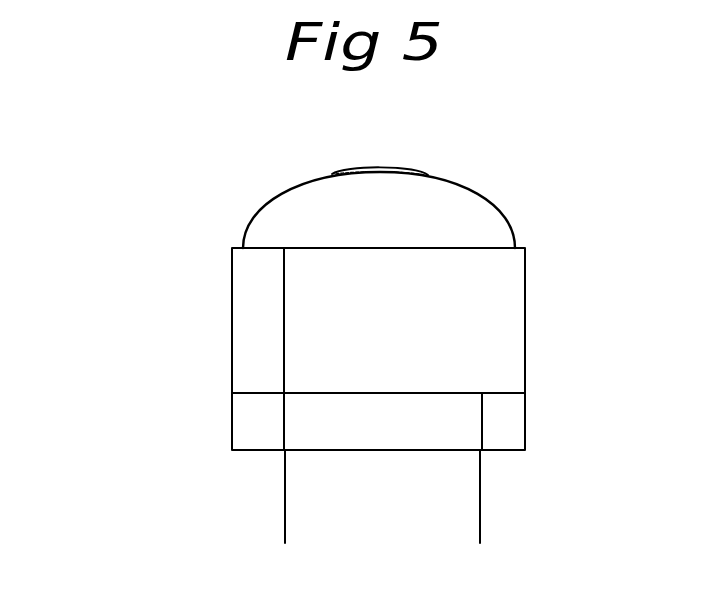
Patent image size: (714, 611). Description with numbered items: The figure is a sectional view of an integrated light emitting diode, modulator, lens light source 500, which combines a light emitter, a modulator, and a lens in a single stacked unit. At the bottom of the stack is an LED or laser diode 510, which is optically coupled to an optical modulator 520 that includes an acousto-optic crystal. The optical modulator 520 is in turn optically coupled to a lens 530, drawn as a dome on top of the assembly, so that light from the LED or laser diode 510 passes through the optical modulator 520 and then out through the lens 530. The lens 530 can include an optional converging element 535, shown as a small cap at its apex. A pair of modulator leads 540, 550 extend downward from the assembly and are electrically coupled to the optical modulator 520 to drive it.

The integrated light emitting diode, modulator, lens light source 500 is at (163, 282).
The LED or laser diode 510 is at (510, 423).
The optical modulator 520 is at (503, 322).
The lens 530 is at (480, 220).
The converging element 535 is at (373, 167).
The modulator lead 540 is at (283, 520).
The modulator lead 550 is at (478, 515).